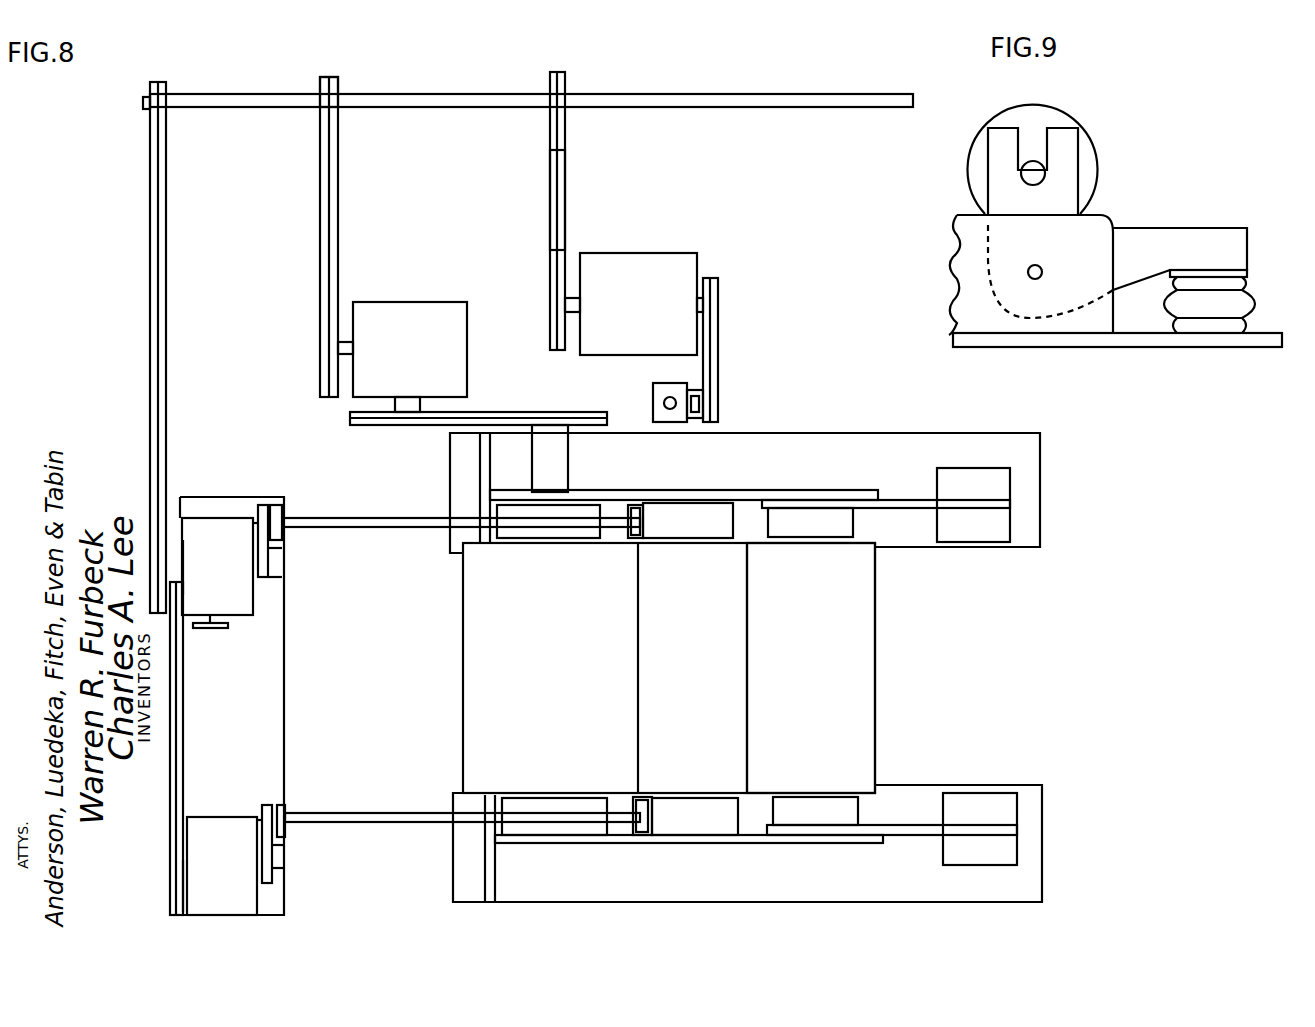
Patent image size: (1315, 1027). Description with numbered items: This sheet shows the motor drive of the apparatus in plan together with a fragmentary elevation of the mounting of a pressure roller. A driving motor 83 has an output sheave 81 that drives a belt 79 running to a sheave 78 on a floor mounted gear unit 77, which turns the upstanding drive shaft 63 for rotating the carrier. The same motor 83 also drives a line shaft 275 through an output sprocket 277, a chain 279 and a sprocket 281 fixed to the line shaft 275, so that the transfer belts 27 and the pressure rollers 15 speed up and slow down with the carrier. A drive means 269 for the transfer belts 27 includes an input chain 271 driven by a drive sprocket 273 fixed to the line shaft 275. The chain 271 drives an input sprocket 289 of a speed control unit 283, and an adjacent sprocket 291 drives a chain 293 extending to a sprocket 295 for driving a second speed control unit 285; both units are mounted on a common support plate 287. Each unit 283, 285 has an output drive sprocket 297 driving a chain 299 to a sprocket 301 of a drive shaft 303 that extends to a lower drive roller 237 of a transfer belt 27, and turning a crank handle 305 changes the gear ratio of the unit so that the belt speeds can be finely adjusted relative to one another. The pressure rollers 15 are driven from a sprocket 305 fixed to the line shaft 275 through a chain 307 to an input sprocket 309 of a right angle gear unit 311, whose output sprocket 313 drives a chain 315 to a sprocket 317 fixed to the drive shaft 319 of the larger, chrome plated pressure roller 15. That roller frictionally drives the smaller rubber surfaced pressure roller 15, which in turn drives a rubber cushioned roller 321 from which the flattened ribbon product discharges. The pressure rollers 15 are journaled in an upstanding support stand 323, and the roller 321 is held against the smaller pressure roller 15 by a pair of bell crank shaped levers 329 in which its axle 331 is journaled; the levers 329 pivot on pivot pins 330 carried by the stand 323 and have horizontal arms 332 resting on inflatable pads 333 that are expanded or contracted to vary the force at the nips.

In FIG. 8, the pressure rollers 15 is at (558, 646).
In FIG. 8, the transfer belts 27 is at (640, 505).
In FIG. 8, the drive shaft 63 is at (662, 401).
In FIG. 8, the gear unit 77 is at (681, 374).
In FIG. 8, the sheave 78 is at (718, 406).
In FIG. 8, the belt 79 is at (718, 340).
In FIG. 8, the output sheave 81 is at (714, 278).
In FIG. 8, the driving motor 83 is at (630, 254).
In FIG. 8, the lower drive roller 237 is at (643, 522).
In FIG. 8, the drive means 269 is at (238, 486).
In FIG. 8, the input chain 271 is at (163, 202).
In FIG. 8, the drive sprocket 273 is at (165, 84).
In FIG. 8, the line shaft 275 is at (262, 102).
In FIG. 8, the output sprocket 277 is at (550, 315).
In FIG. 8, the chain 279 is at (548, 170).
In FIG. 8, the sprocket 281 is at (548, 88).
In FIG. 8, the speed control unit 283 is at (228, 600).
In FIG. 8, the speed control unit 285 is at (234, 864).
In FIG. 8, the support plate 287 is at (284, 688).
In FIG. 8, the input sprocket 289 is at (180, 594).
In FIG. 8, the sprocket 291 is at (174, 590).
In FIG. 8, the chain 293 is at (183, 704).
In FIG. 8, the sprocket 295 is at (183, 902).
In FIG. 8, the output drive sprocket 297 is at (268, 578).
In FIG. 8, the chain 299 is at (268, 548).
In FIG. 8, the sprocket 301 is at (263, 506).
In FIG. 8, the drive shaft 303 is at (388, 518).
In FIG. 8, the crank handle 305 is at (337, 84).
In FIG. 8, the chain 307 is at (338, 197).
In FIG. 8, the input sprocket 309 is at (330, 396).
In FIG. 8, the right angle gear unit 311 is at (418, 336).
In FIG. 8, the output sprocket 313 is at (396, 426).
In FIG. 8, the chain 315 is at (478, 412).
In FIG. 8, the sprocket 317 is at (600, 412).
In FIG. 8, the drive shaft 319 is at (560, 474).
In FIG. 8, the roller 321 is at (824, 640).
In FIG. 9, the roller 321 is at (1055, 118).
In FIG. 8, the support stand 323 is at (780, 492).
In FIG. 9, the support stand 323 is at (1083, 320).
In FIG. 8, the bell crank shaped levers 329 is at (918, 500).
In FIG. 9, the bell crank shaped levers 329 is at (1140, 215).
In FIG. 9, the pivot pins 330 is at (1037, 265).
In FIG. 9, the axle 331 is at (1043, 168).
In FIG. 9, the horizontal arms 332 is at (1175, 262).
In FIG. 8, the inflatable pads 333 is at (985, 476).
In FIG. 9, the inflatable pads 333 is at (1252, 305).